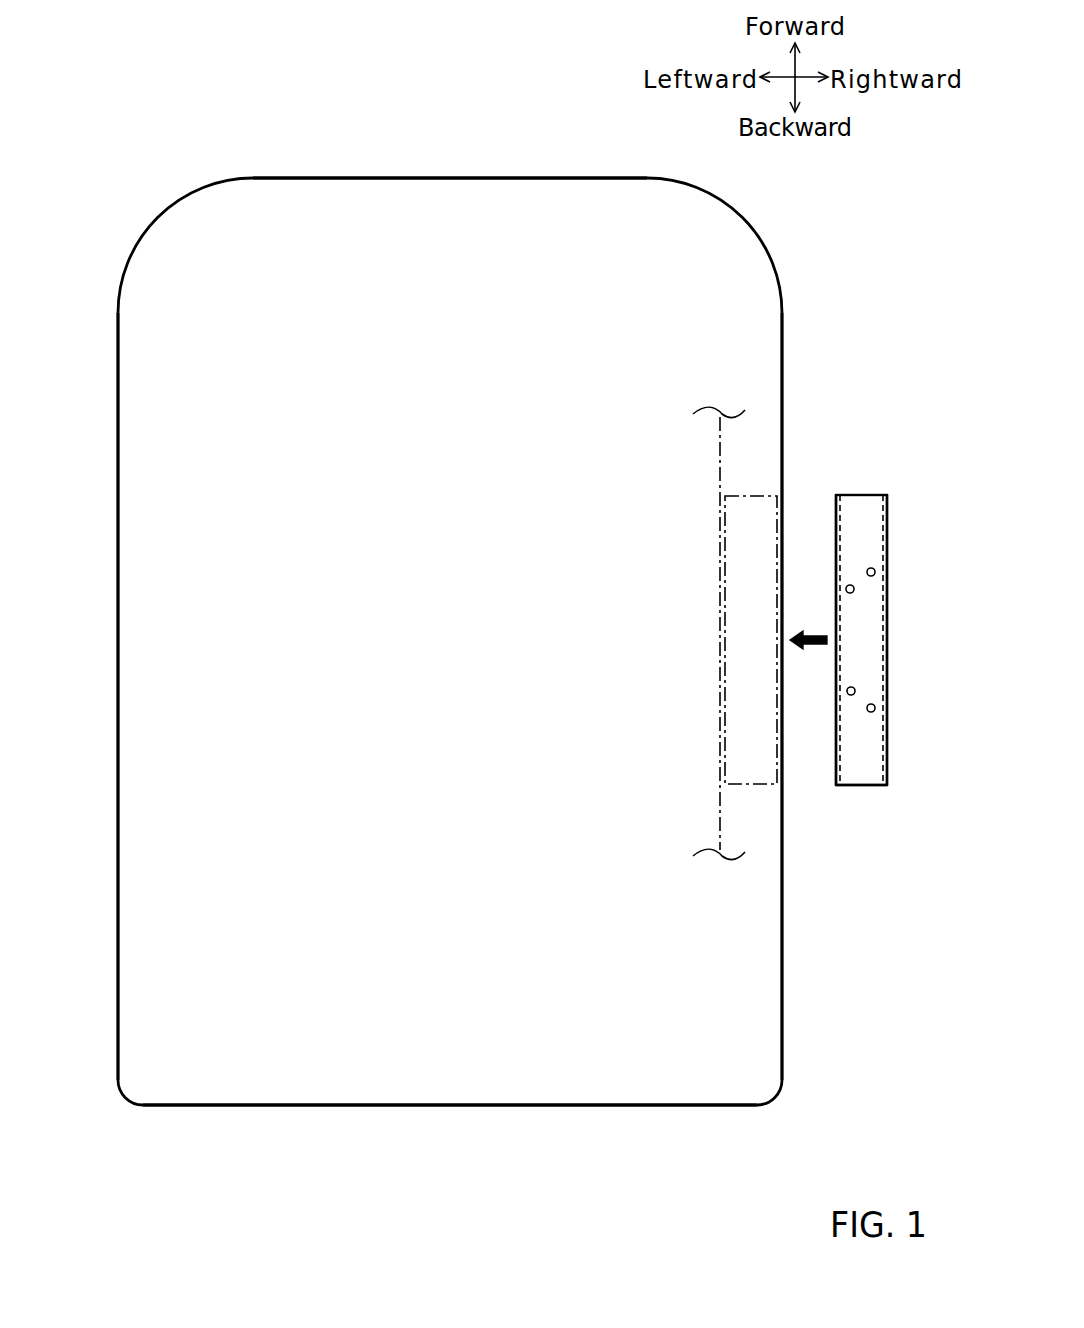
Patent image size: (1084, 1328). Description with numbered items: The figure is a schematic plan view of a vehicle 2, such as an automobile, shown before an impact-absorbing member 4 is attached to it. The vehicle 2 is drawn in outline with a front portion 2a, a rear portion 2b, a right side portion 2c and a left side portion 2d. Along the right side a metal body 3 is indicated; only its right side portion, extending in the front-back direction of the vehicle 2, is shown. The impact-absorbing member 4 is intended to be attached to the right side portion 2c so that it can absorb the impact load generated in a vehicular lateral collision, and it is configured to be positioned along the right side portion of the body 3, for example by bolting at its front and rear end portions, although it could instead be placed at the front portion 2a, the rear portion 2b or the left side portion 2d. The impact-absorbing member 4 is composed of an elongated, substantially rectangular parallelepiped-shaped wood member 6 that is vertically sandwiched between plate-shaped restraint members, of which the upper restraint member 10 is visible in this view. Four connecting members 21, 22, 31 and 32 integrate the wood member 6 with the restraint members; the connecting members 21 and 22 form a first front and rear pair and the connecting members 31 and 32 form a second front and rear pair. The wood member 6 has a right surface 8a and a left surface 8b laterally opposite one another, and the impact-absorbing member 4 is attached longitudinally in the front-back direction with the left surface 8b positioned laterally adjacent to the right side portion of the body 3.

The vehicle 2 is at (179, 177).
The front portion 2a is at (465, 178).
The rear portion 2b is at (425, 1105).
The right side portion 2c is at (783, 915).
The left side portion 2d is at (118, 896).
The body 3 is at (720, 433).
The impact-absorbing member 4 is at (840, 645).
The restraint member 10 is at (881, 676).
The connecting member 21 is at (875, 570).
The connecting member 22 is at (875, 710).
The connecting member 31 is at (854, 591).
The connecting member 32 is at (855, 690).
The right surface 8a is at (888, 758).
The left surface 8b is at (835, 760).
The wood member 6 is at (862, 773).